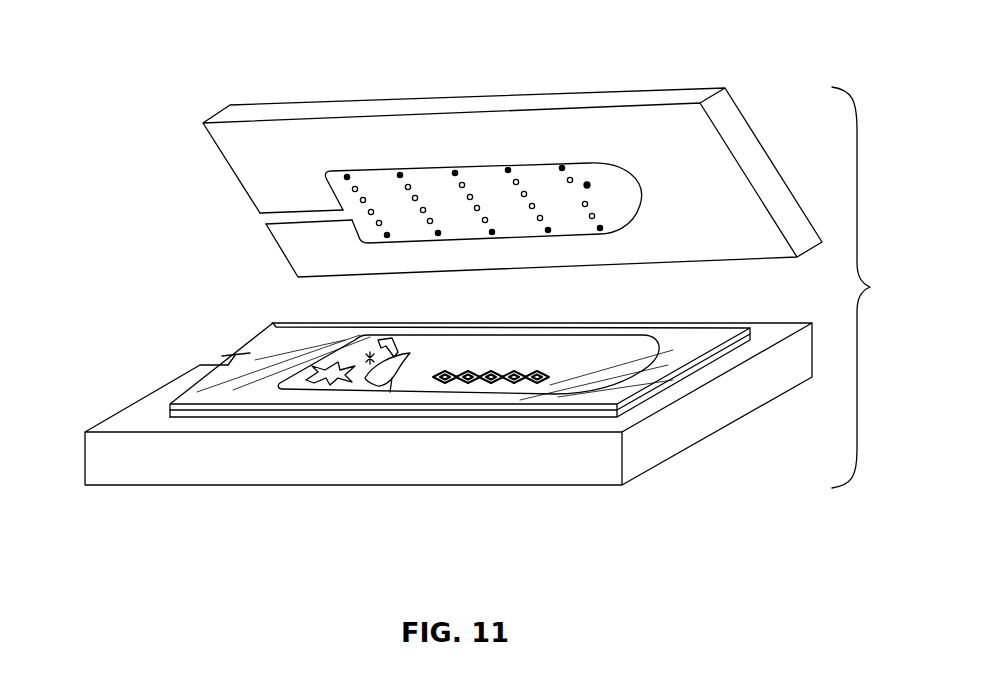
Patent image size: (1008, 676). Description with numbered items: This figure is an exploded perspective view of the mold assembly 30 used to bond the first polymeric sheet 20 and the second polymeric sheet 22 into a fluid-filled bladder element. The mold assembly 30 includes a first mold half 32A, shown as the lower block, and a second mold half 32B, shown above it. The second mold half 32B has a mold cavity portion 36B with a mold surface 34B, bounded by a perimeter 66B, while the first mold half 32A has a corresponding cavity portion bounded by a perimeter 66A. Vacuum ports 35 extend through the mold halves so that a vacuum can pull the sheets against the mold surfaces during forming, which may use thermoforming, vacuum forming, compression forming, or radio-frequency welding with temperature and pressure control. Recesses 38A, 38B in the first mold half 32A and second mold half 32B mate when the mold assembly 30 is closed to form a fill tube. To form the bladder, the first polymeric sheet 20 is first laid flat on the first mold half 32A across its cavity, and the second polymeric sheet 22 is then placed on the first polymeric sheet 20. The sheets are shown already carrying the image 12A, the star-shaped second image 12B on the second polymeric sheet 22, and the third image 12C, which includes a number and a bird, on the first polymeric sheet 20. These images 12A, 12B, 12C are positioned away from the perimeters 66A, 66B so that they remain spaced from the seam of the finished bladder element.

The mold assembly 30 is at (876, 287).
The second mold half 32B is at (232, 114).
The first mold half 32A is at (128, 473).
The perimeter of mold cavity portion 66B is at (340, 168).
The perimeter of mold cavity portion 66A is at (278, 388).
The mold surface 34B is at (460, 193).
The mold cavity portion 36B is at (548, 186).
The vacuum ports 35 is at (589, 184).
The recess 38B is at (276, 216).
The recess 38A is at (222, 363).
The second polymeric sheet 22 is at (703, 336).
The first polymeric sheet 20 is at (663, 384).
The image 12A is at (458, 383).
The second image 12B is at (334, 372).
The third image 12C is at (373, 385).